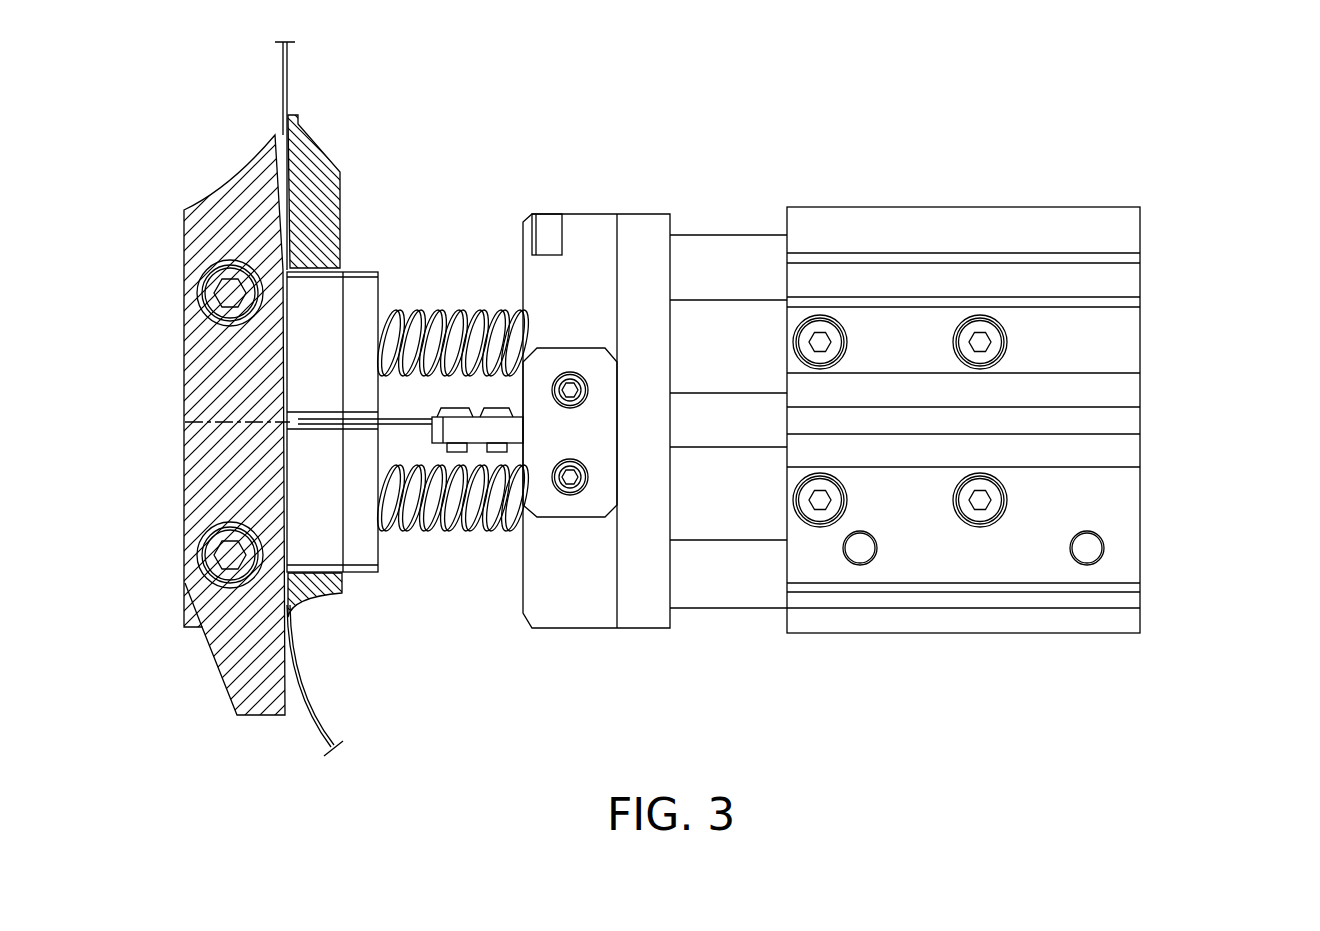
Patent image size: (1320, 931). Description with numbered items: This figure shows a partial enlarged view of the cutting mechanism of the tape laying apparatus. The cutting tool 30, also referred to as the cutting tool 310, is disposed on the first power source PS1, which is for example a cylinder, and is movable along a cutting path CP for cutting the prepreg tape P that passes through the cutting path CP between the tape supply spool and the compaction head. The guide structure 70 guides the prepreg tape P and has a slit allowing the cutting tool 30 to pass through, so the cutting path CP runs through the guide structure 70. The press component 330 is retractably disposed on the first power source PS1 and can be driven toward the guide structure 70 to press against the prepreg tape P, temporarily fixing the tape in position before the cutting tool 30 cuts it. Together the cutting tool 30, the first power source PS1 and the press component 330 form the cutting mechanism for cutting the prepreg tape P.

The cutting tool 30 is at (1204, 388).
The guide structure 70 is at (212, 161).
The cutting tool 310 is at (403, 414).
The press component 330 is at (368, 573).
The cutting path CP is at (235, 422).
The prepreg tape P is at (307, 697).
The first power source PS1 is at (970, 215).